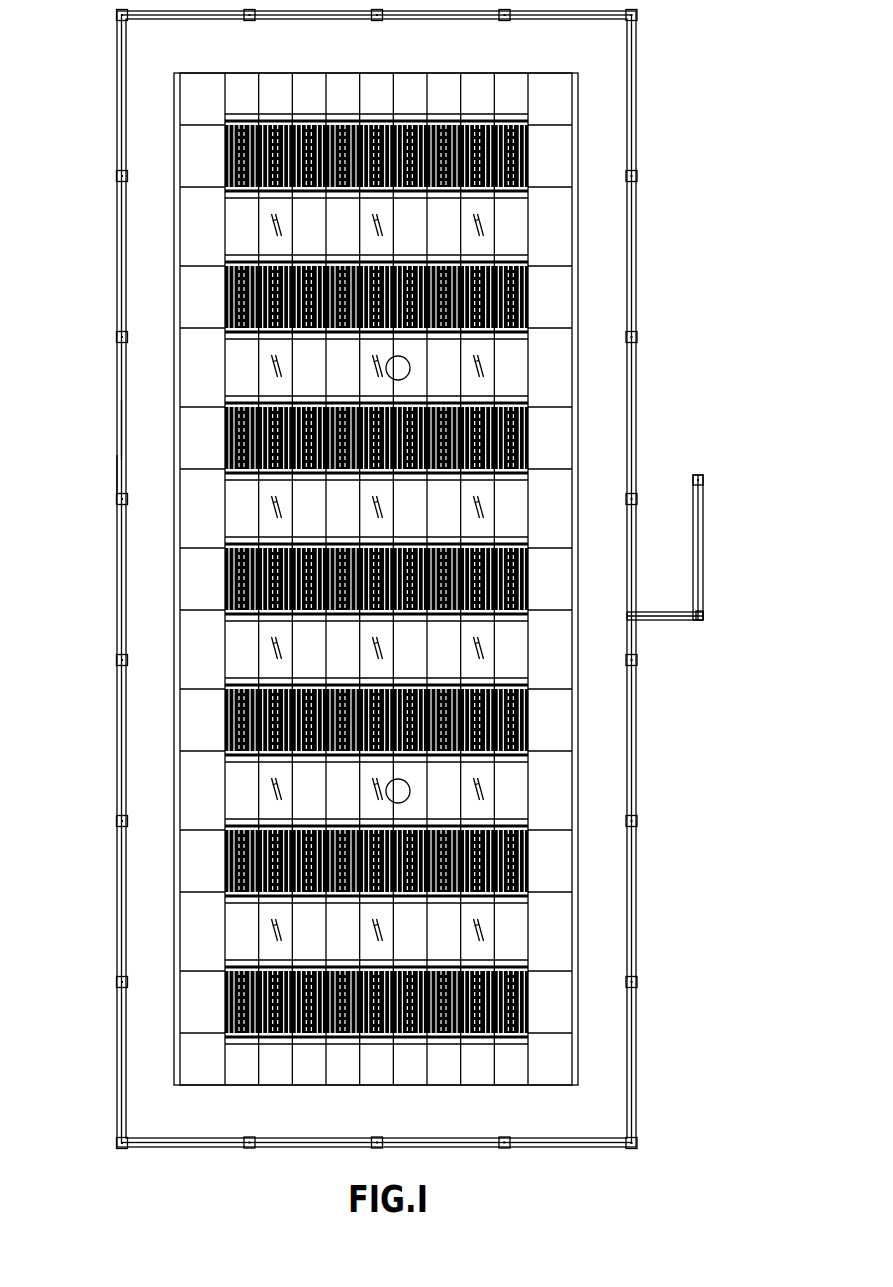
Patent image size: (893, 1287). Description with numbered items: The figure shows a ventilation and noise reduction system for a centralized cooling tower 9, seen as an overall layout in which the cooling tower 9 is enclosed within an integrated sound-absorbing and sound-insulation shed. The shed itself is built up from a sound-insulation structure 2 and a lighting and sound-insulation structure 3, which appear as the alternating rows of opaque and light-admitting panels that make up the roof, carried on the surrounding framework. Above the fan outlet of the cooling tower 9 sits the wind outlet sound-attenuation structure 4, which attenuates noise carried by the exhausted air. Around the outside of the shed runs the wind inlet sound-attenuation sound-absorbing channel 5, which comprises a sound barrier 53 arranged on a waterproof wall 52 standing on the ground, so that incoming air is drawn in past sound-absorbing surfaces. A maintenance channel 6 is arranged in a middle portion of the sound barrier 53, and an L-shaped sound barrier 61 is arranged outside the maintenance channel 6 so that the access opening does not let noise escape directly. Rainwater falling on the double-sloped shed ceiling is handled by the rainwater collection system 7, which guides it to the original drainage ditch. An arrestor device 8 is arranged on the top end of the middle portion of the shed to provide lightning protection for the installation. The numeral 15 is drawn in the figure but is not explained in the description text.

The sound-insulation structure 2 is at (204, 570).
The lighting and sound-insulation structure 3 is at (268, 652).
The wind outlet sound-attenuation structure 4 is at (225, 748).
The wind inlet sound-attenuation sound-absorbing channel 5 is at (154, 363).
The maintenance channel 6 is at (639, 579).
The rainwater collection system 7 is at (177, 858).
The arrestor device 8 is at (401, 791).
The cooling tower 9 is at (520, 857).
The vertical divider 15 is at (227, 508).
The waterproof wall 52 is at (118, 474).
The sound barrier 53 is at (120, 431).
The L-shaped sound barrier 61 is at (700, 562).